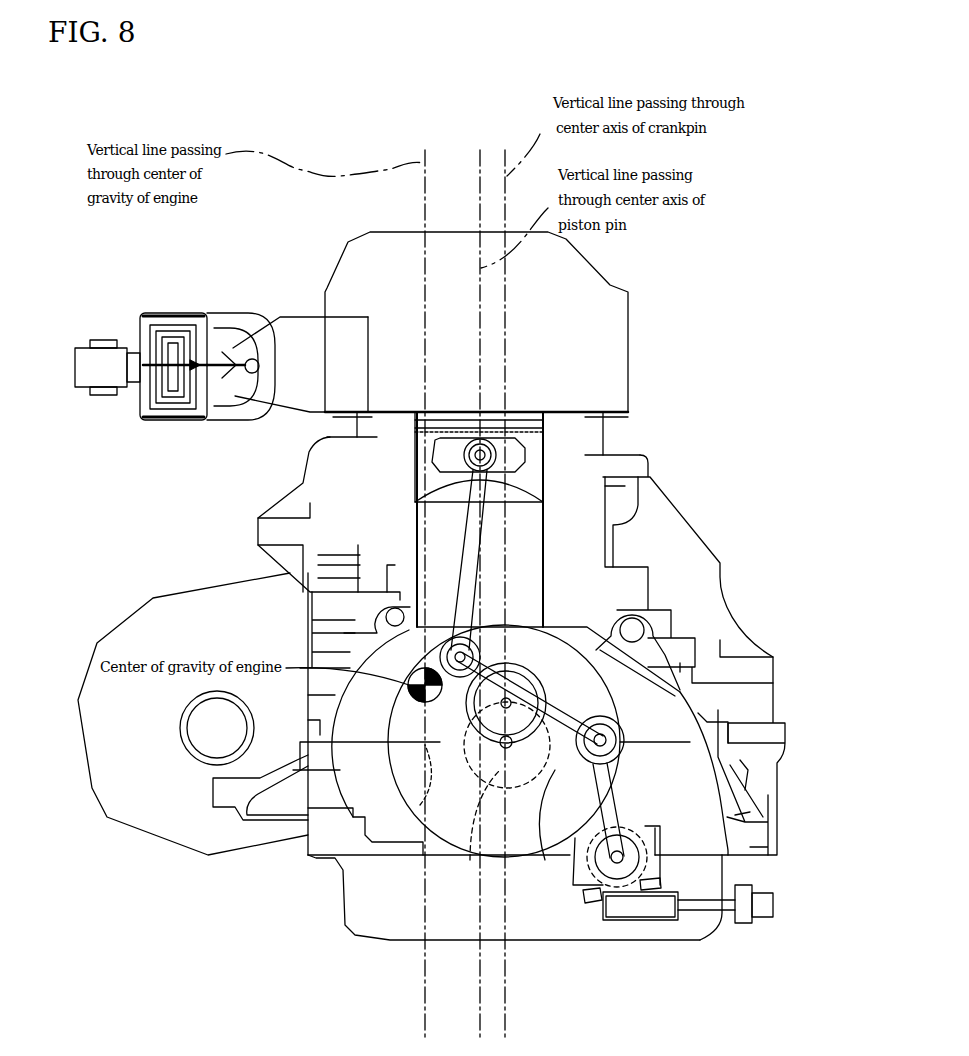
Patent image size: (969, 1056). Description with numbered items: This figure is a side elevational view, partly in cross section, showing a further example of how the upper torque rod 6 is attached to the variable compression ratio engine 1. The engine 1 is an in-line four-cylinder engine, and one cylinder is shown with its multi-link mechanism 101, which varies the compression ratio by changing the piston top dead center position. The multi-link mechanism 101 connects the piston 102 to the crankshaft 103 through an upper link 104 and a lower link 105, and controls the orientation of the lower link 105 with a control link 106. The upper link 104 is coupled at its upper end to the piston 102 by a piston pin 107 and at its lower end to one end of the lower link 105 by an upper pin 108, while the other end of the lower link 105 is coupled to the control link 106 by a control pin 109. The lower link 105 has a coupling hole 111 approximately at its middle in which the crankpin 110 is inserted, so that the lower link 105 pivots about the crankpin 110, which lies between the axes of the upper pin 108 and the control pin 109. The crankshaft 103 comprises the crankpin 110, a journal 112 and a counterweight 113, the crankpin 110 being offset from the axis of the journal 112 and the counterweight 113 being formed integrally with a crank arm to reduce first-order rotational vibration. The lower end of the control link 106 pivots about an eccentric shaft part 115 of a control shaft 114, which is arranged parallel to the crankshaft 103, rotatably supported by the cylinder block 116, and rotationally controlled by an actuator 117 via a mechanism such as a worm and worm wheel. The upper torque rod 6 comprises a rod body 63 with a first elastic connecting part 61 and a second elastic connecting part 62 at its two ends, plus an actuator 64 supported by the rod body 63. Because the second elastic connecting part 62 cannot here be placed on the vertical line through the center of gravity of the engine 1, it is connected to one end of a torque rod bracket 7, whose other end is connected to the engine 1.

The variable compression ratio engine 1 is at (750, 235).
The upper torque rod 6 is at (160, 368).
The first elastic connecting part 61 is at (95, 395).
The second elastic connecting part 62 is at (238, 420).
The rod body 63 is at (157, 420).
The actuator 64 is at (160, 313).
The torque rod bracket 7 is at (298, 340).
The multi-link mechanism 101 is at (575, 592).
The piston 102 is at (548, 458).
The crankshaft 103 is at (497, 797).
The upper link 104 is at (455, 520).
The lower link 105 is at (540, 830).
The control link 106 is at (556, 830).
The piston pin 107 is at (485, 445).
The upper pin 108 is at (441, 656).
The control pin 109 is at (618, 734).
The crankpin 110 is at (447, 838).
The coupling hole 111 is at (447, 708).
The journal 112 is at (507, 803).
The counterweight 113 is at (462, 820).
The control shaft 114 is at (660, 873).
The eccentric shaft part 115 is at (620, 880).
The cylinder block 116 is at (767, 805).
The actuator 117 is at (762, 908).